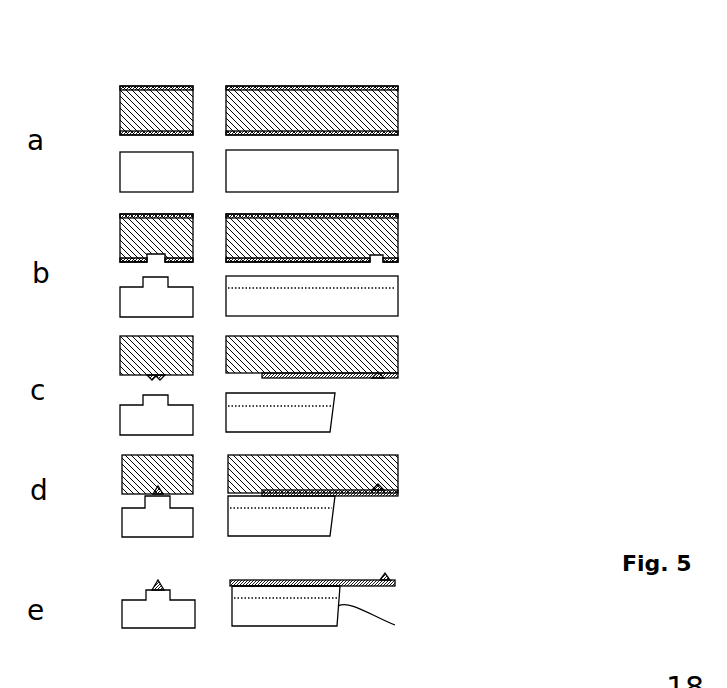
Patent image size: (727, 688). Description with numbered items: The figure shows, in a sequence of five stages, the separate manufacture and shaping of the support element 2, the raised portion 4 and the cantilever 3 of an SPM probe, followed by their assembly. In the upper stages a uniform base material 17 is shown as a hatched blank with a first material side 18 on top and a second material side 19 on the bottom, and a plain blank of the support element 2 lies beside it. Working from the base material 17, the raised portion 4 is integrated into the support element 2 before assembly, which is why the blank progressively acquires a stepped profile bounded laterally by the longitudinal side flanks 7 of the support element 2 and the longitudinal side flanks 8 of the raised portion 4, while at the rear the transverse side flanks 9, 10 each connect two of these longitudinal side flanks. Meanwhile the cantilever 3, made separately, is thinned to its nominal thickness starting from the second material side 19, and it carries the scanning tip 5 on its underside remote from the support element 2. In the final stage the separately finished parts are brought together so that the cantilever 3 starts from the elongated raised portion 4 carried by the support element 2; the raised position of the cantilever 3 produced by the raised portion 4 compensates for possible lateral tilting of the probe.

The base material 17 is at (387, 110).
The first material side 18 is at (341, 84).
The second material side 19 is at (380, 137).
The cantilever 3 is at (355, 377).
The support element 2 is at (318, 423).
The raised portion 4 is at (323, 400).
The scanning tip 5 is at (392, 578).
The longitudinal side flanks of the support element 7 is at (122, 620).
The longitudinal side flanks of the raised portion 8 is at (143, 593).
The rear transverse side flank 9 is at (228, 618).
The rear transverse side flank 10 is at (228, 597).